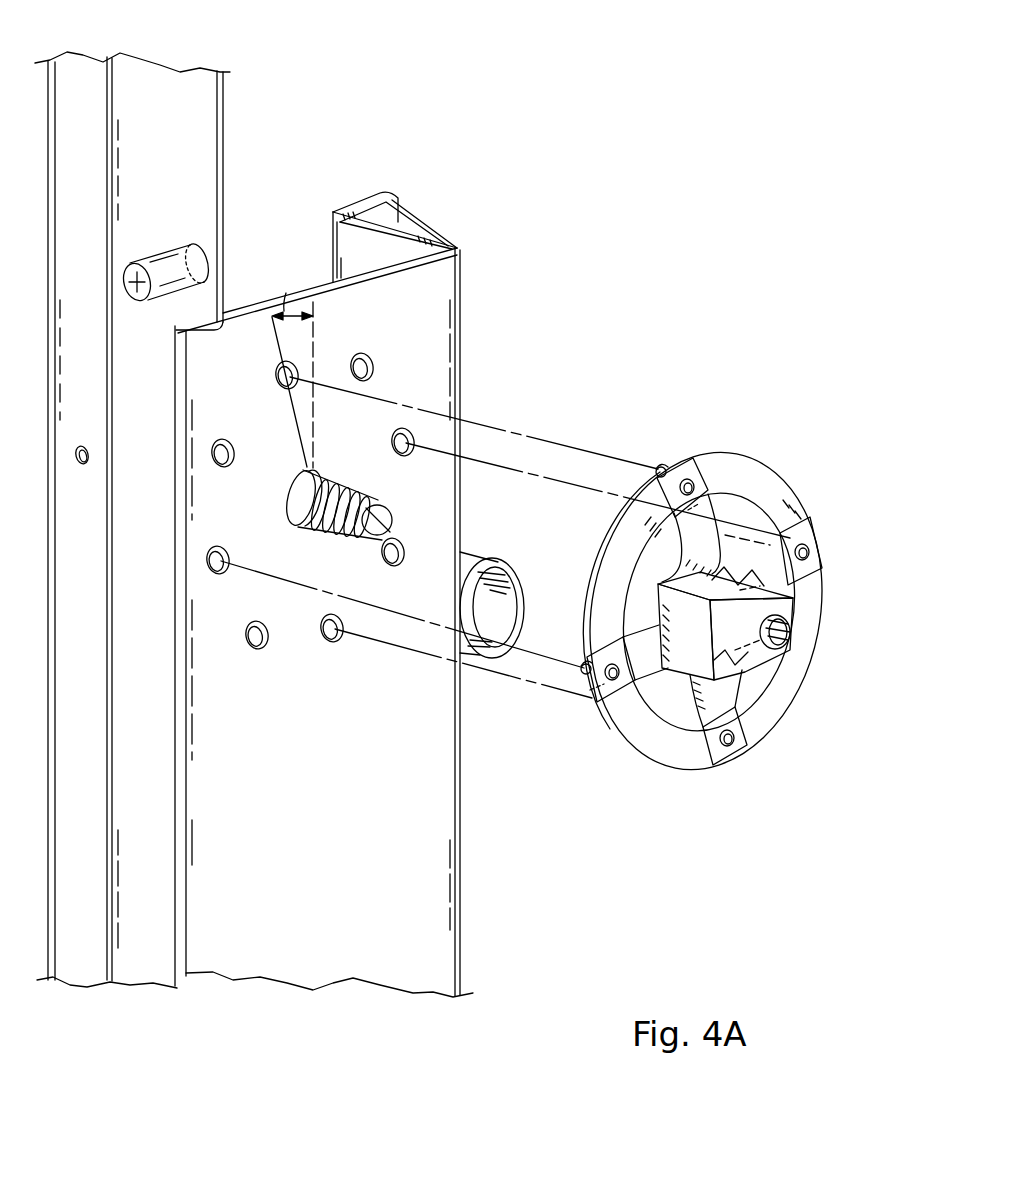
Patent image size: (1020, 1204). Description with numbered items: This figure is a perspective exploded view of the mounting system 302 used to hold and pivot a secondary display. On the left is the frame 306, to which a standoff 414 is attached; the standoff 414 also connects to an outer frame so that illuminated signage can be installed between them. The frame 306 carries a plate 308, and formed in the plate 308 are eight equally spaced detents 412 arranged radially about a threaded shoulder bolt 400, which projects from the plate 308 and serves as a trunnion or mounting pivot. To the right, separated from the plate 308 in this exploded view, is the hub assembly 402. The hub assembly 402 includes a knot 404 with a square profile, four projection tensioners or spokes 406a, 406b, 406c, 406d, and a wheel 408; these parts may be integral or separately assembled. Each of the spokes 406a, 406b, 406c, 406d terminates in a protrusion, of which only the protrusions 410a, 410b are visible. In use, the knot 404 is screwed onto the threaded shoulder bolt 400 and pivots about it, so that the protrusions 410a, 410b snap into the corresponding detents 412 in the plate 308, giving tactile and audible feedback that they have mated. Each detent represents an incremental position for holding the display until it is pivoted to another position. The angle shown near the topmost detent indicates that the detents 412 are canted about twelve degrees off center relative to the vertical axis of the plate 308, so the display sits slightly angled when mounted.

The mounting system 302 is at (548, 232).
The frame 306 is at (84, 967).
The plate 308 is at (343, 874).
The threaded shoulder bolt 400 is at (392, 515).
The hub assembly 402 is at (693, 591).
The knot 404 is at (783, 648).
The projection tensioner (spoke) 406a is at (596, 703).
The projection tensioner (spoke) 406b is at (720, 758).
The projection tensioner (spoke) 406c is at (813, 557).
The projection tensioner (spoke) 406d is at (690, 458).
The wheel 408 is at (646, 741).
The protrusion 410a is at (583, 668).
The protrusion 410b is at (660, 466).
The detents 412 is at (233, 440).
The standoff 414 is at (175, 263).